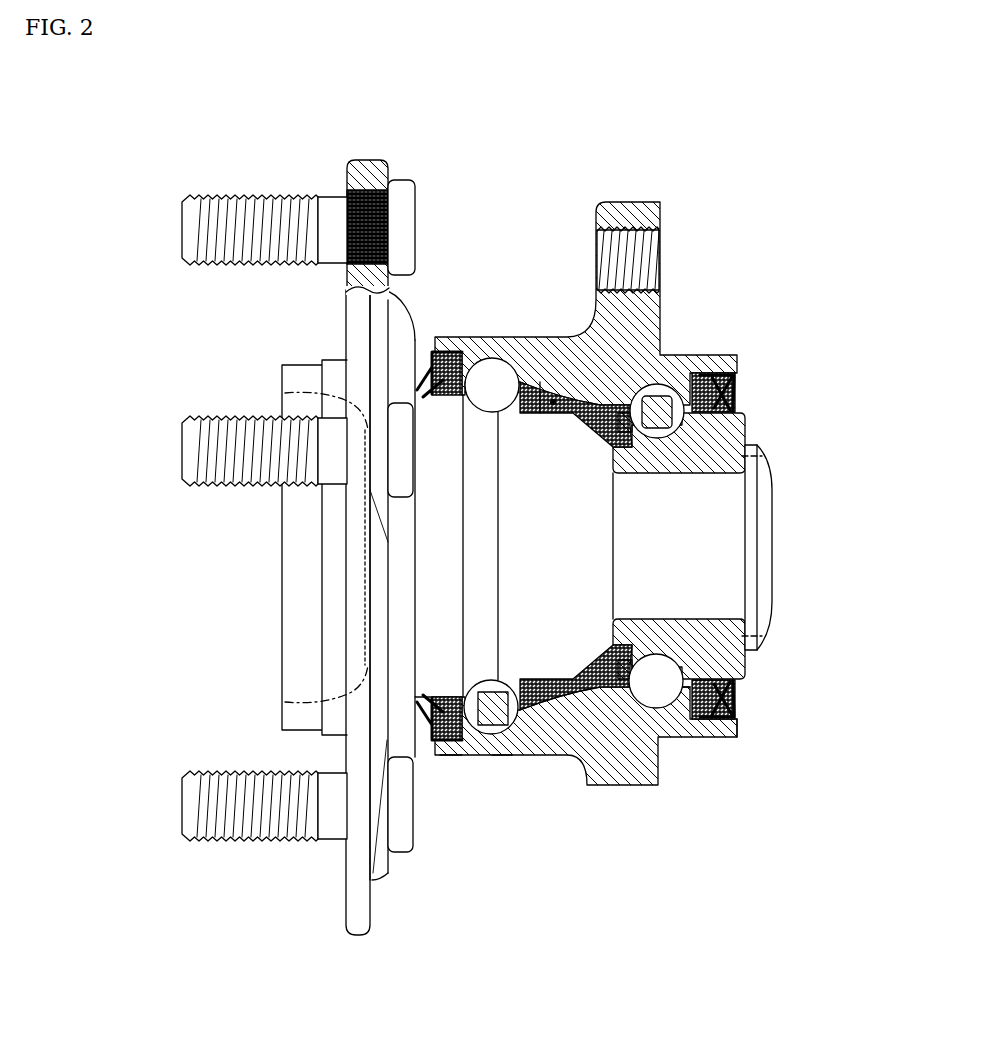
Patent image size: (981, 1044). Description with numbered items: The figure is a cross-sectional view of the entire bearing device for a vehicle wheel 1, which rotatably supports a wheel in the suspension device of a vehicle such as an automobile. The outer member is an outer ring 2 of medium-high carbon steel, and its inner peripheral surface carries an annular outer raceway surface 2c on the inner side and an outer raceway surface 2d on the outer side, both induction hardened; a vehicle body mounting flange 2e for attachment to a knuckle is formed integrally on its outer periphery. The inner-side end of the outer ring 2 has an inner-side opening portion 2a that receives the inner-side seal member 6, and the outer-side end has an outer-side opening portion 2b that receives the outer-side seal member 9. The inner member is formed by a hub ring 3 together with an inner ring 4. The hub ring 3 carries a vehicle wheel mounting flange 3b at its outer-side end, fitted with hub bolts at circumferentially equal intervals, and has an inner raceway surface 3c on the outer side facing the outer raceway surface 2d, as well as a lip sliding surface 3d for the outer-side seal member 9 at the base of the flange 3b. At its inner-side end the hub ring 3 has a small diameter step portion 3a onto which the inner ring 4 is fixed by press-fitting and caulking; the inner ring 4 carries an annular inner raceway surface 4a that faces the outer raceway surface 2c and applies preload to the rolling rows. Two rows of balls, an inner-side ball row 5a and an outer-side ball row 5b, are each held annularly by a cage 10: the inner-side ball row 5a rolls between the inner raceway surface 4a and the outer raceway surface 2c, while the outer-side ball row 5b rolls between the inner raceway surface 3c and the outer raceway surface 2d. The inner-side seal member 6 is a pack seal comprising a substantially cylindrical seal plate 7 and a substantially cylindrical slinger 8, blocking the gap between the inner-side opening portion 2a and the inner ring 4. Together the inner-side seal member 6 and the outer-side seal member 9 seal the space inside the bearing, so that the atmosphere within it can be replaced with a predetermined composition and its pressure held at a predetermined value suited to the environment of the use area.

The bearing device for a vehicle wheel 1 is at (86, 106).
The outer ring 2 is at (588, 485).
The inner-side opening portion 2a is at (712, 740).
The outer-side opening portion 2b is at (453, 757).
The outer raceway surface on the inner side 2c is at (678, 700).
The outer raceway surface on the outer side 2d is at (500, 757).
The vehicle body mounting flange 2e is at (619, 205).
The hub ring 3 is at (499, 518).
The small diameter step portion 3a is at (728, 461).
The vehicle wheel mounting flange 3b is at (364, 165).
The inner raceway surface on the outer side 3c is at (482, 406).
The lip sliding surface 3d is at (448, 698).
The inner ring 4 is at (697, 548).
The inner raceway surface 4a is at (657, 654).
The inner-side ball row 5a is at (662, 390).
The outer-side ball row 5b is at (490, 360).
The inner-side seal member 6 is at (748, 385).
The seal plate 7 is at (738, 374).
The slinger 8 is at (737, 401).
The outer-side seal member 9 is at (432, 352).
The cage 10 is at (593, 422).